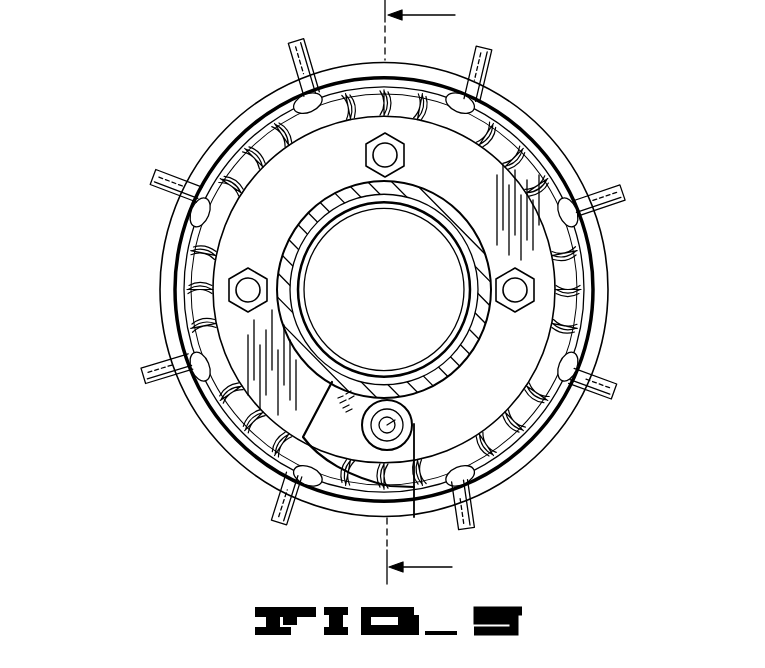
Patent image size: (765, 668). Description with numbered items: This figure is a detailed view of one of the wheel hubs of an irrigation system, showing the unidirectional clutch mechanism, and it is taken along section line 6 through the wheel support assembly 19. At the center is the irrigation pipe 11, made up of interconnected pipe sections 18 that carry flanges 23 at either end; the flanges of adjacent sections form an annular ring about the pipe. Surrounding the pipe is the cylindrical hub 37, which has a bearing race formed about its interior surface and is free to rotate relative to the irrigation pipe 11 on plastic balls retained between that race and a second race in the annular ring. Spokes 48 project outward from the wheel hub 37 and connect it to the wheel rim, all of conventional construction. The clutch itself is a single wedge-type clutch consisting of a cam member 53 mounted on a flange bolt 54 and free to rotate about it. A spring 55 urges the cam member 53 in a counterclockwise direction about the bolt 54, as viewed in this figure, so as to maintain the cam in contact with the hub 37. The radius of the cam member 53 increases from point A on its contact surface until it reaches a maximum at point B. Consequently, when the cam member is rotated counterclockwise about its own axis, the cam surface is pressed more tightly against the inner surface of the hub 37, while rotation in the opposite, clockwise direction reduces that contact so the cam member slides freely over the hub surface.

The section line 6- 6 is at (406, 294).
The irrigation pipe 11 is at (438, 216).
The pipe sections 18 is at (392, 206).
The wheel support assembly 19 is at (142, 283).
The flanges 23 is at (300, 206).
The cylindrical hub 37 is at (594, 258).
The spokes 48 is at (172, 178).
The cam member 53 is at (353, 467).
The flange bolt 54 is at (394, 423).
The spring 55 is at (375, 362).
The point A is at (414, 517).
The point B is at (305, 437).